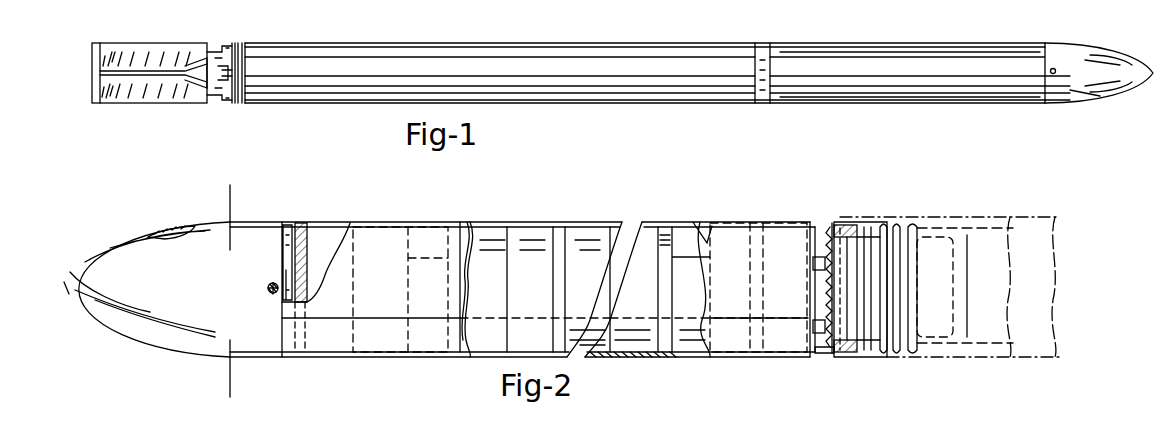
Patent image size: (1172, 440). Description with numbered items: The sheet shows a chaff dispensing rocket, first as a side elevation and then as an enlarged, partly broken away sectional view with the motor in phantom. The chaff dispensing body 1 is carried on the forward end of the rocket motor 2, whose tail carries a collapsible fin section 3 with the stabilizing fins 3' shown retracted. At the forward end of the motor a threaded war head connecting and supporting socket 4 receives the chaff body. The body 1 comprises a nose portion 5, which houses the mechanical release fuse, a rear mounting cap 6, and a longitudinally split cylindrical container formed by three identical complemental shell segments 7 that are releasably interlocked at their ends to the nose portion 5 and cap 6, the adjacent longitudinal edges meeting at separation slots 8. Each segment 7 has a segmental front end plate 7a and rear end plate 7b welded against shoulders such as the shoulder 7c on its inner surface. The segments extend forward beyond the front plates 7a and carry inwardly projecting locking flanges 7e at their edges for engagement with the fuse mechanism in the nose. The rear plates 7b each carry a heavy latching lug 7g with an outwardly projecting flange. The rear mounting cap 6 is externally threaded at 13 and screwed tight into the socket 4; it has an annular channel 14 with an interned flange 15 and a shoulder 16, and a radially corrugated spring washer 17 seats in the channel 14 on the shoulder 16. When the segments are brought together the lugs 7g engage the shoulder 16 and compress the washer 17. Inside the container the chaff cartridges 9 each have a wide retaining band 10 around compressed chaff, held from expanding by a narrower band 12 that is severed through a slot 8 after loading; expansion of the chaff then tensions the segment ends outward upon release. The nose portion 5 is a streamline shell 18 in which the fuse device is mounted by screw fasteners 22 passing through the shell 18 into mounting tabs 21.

In FIG. 1, the chaff dispensing body 1 is at (1006, 105).
In FIG. 2, the chaff dispensing body 1 is at (400, 215).
In FIG. 1, the rocket motor 2 is at (622, 98).
In FIG. 2, the rocket motor 2 is at (1003, 242).
In FIG. 1, the collapsible fin section 3 is at (149, 88).
In FIG. 2, the collapsible fin section 3 is at (211, 291).
In FIG. 1, the stabilizing fins 3' is at (133, 71).
In FIG. 2, the war head connecting and supporting socket 4 is at (867, 320).
In FIG. 1, the nose portion 5 is at (1112, 109).
In FIG. 2, the nose portion 5 is at (126, 352).
In FIG. 1, the rear mounting cap 6 is at (762, 100).
In FIG. 2, the rear mounting cap 6 is at (829, 223).
In FIG. 1, the complemental shell segments 7 is at (952, 100).
In FIG. 2, the complemental shell segments 7 is at (324, 222).
In FIG. 2, the front end plate 7a is at (303, 276).
In FIG. 2, the rear end plate 7b is at (807, 333).
In FIG. 2, the shoulder 7c is at (302, 214).
In FIG. 2, the locking flanges 7e is at (288, 335).
In FIG. 2, the latching lug 7g is at (817, 260).
In FIG. 1, the separation slots 8 is at (885, 83).
In FIG. 2, the separation slots 8 is at (686, 222).
In FIG. 2, the chaff cartridges 9 is at (425, 240).
In FIG. 2, the retaining band 10 is at (583, 242).
In FIG. 2, the narrower band 12 is at (557, 228).
In FIG. 2, the external threads 13 is at (883, 223).
In FIG. 2, the annular channel 14 is at (823, 354).
In FIG. 2, the interned flange 15 is at (823, 223).
In FIG. 2, the shoulder 16 is at (823, 237).
In FIG. 2, the corrugated spring washer 17 is at (847, 310).
In FIG. 1, the streamline shell 18 is at (1082, 92).
In FIG. 2, the streamline shell 18 is at (170, 226).
In FIG. 2, the mounting tabs 21 is at (273, 283).
In FIG. 1, the screw fasteners 22 is at (1055, 68).
In FIG. 2, the screw fasteners 22 is at (270, 294).